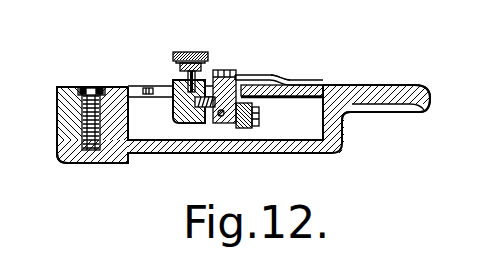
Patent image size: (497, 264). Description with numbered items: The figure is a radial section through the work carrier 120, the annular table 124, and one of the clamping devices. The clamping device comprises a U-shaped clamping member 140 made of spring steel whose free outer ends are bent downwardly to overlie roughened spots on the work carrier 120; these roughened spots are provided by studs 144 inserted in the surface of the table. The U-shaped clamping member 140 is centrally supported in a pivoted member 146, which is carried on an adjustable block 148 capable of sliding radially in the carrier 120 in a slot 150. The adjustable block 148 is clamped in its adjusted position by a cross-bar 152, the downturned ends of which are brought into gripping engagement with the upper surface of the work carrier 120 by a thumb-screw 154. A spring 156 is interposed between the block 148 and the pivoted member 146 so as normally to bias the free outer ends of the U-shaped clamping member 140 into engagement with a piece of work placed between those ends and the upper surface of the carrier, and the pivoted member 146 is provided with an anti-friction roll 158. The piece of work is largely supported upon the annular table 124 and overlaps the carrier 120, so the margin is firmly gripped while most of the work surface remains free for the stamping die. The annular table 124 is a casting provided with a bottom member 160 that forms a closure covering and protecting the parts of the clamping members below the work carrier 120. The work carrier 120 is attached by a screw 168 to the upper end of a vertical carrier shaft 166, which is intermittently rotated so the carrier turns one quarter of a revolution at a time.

The work carrier 120 is at (323, 80).
The annular table 124 is at (392, 84).
The U-shaped clamping member 140 is at (283, 79).
The studs 144 is at (325, 77).
The pivoted member 146 is at (247, 76).
The adjustable block 148 is at (172, 94).
The slot 150 is at (153, 87).
The cross-bar 152 is at (178, 71).
The thumb-screw 154 is at (196, 50).
The spring 156 is at (200, 102).
The anti-friction roll 158 is at (254, 124).
The bottom member 160 is at (224, 153).
The vertical carrier shaft 166 is at (66, 160).
The screw 168 is at (78, 86).